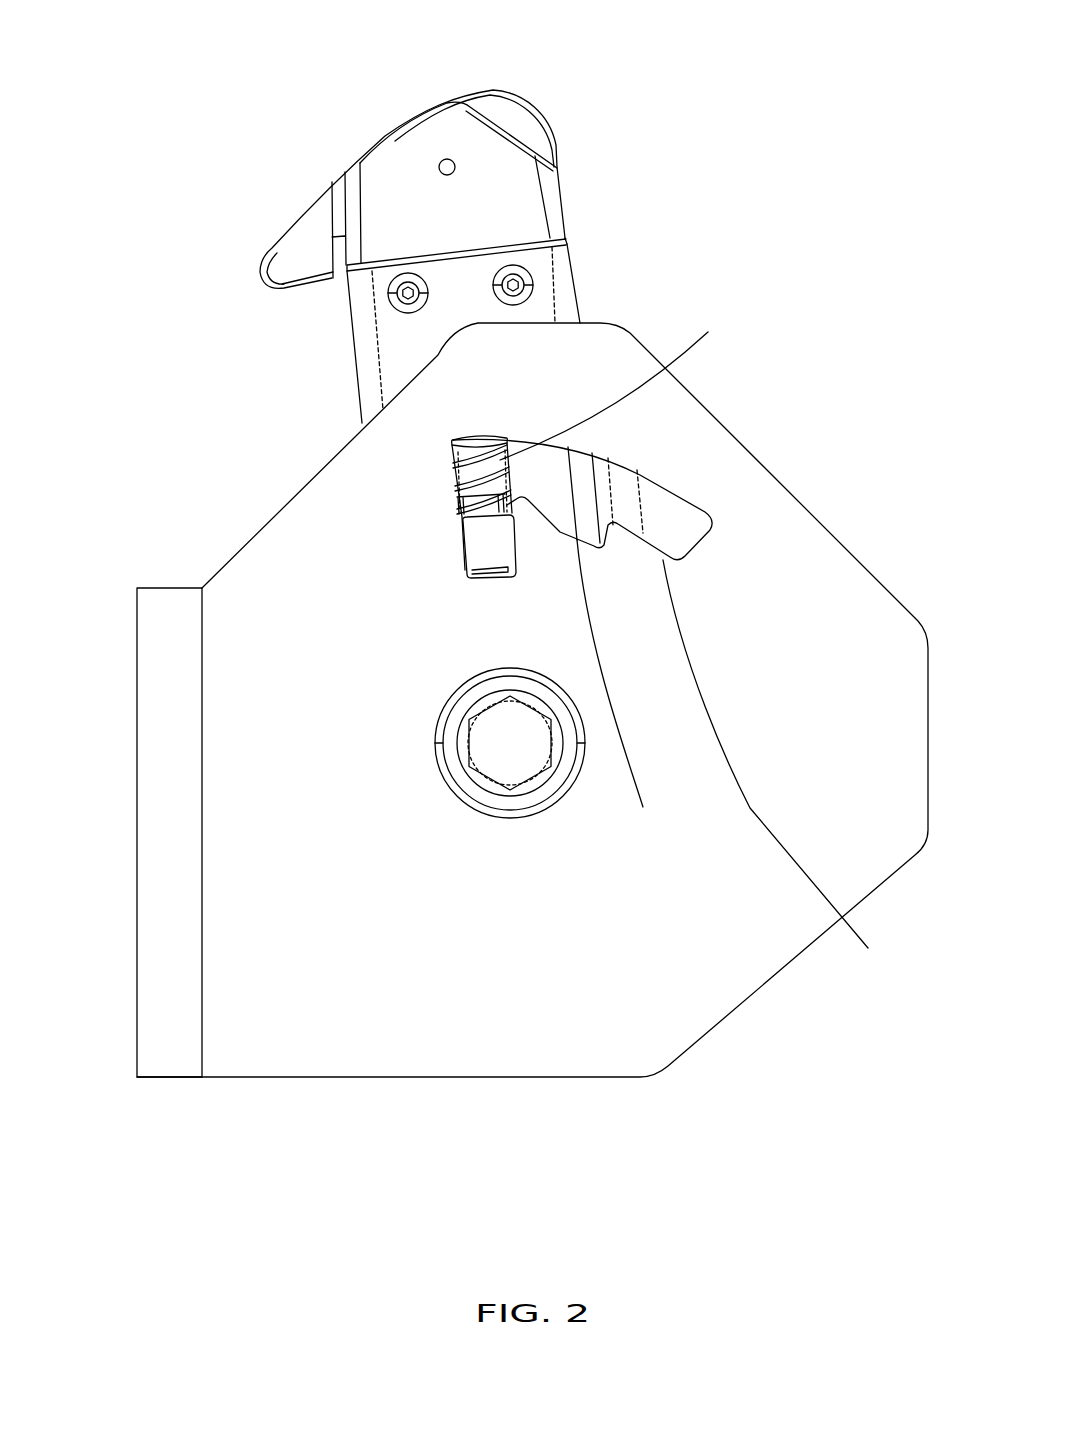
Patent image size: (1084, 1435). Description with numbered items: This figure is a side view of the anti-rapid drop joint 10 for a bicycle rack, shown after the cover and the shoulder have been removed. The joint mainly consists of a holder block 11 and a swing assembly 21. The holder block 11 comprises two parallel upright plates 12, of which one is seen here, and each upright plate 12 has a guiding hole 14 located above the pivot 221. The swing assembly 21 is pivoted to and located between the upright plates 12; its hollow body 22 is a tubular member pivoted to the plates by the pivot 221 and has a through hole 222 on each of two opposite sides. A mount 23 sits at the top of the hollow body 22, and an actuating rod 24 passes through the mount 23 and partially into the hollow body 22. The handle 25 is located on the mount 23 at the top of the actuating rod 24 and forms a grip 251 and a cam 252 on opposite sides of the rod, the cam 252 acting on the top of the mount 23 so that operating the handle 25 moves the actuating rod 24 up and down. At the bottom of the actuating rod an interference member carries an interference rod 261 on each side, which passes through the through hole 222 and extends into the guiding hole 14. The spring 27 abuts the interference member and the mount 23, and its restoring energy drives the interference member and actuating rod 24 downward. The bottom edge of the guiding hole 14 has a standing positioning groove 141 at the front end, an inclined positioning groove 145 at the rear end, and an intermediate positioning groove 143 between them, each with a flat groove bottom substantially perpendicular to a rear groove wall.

The anti-rapid drop joint 10 is at (170, 88).
The holder block 11 is at (128, 1052).
The upright plate 12 is at (477, 1037).
The guiding hole 14 is at (687, 493).
The standing positioning groove 141 is at (490, 578).
The intermediate positioning groove 143 is at (643, 807).
The inclined positioning groove 145 is at (782, 771).
The swing assembly 21 is at (586, 192).
The hollow body 22 is at (582, 290).
The pivot 221 is at (522, 750).
The through hole 222 is at (629, 387).
The mount 23 is at (570, 238).
The actuating rod 24 is at (473, 465).
The handle 25 is at (290, 188).
The grip 251 is at (265, 243).
The cam 252 is at (555, 140).
The spring 27 is at (460, 487).
The interference rod 261 is at (480, 548).